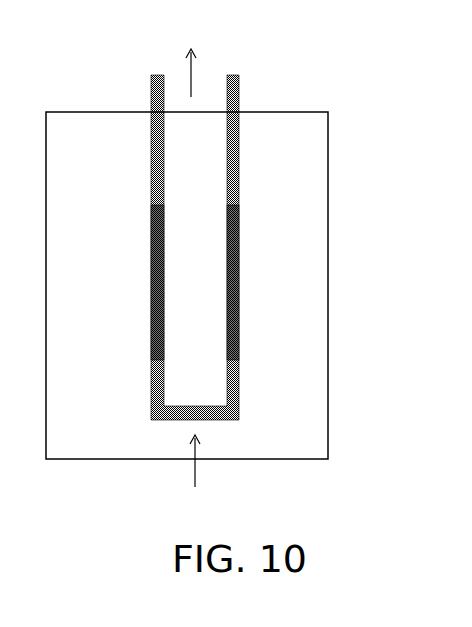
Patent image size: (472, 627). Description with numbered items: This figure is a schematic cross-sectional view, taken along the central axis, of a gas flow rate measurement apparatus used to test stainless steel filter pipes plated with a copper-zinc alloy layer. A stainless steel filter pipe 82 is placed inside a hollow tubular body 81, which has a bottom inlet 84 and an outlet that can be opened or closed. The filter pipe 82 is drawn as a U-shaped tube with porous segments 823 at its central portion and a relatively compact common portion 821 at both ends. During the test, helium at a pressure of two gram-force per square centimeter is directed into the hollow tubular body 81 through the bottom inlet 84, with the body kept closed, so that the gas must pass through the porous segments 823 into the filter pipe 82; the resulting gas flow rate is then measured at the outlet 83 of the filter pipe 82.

The hollow tubular body 81 is at (96, 443).
The stainless steel filter pipe 82 is at (236, 233).
The common portion 821 is at (160, 165).
The porous segment 823 is at (239, 312).
The outlet 83 is at (190, 56).
The inlet 84 is at (198, 477).